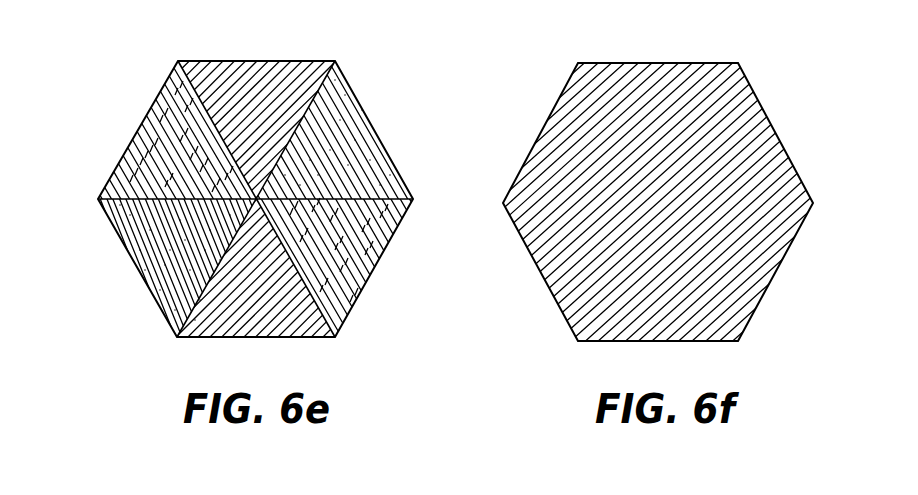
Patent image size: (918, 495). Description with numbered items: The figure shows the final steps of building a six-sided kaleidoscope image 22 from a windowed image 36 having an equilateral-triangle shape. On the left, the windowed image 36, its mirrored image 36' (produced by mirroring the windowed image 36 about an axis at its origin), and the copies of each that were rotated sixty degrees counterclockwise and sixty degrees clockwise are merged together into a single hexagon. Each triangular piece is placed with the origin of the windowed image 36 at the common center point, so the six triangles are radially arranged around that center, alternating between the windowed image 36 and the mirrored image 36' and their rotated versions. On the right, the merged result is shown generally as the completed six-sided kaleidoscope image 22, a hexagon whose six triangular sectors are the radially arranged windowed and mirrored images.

In FIG. 6e, the windowed image 36 is at (259, 102).
In FIG. 6e, the mirrored image 36' is at (256, 308).
In FIG. 6f, the kaleidoscope image 22 is at (640, 63).